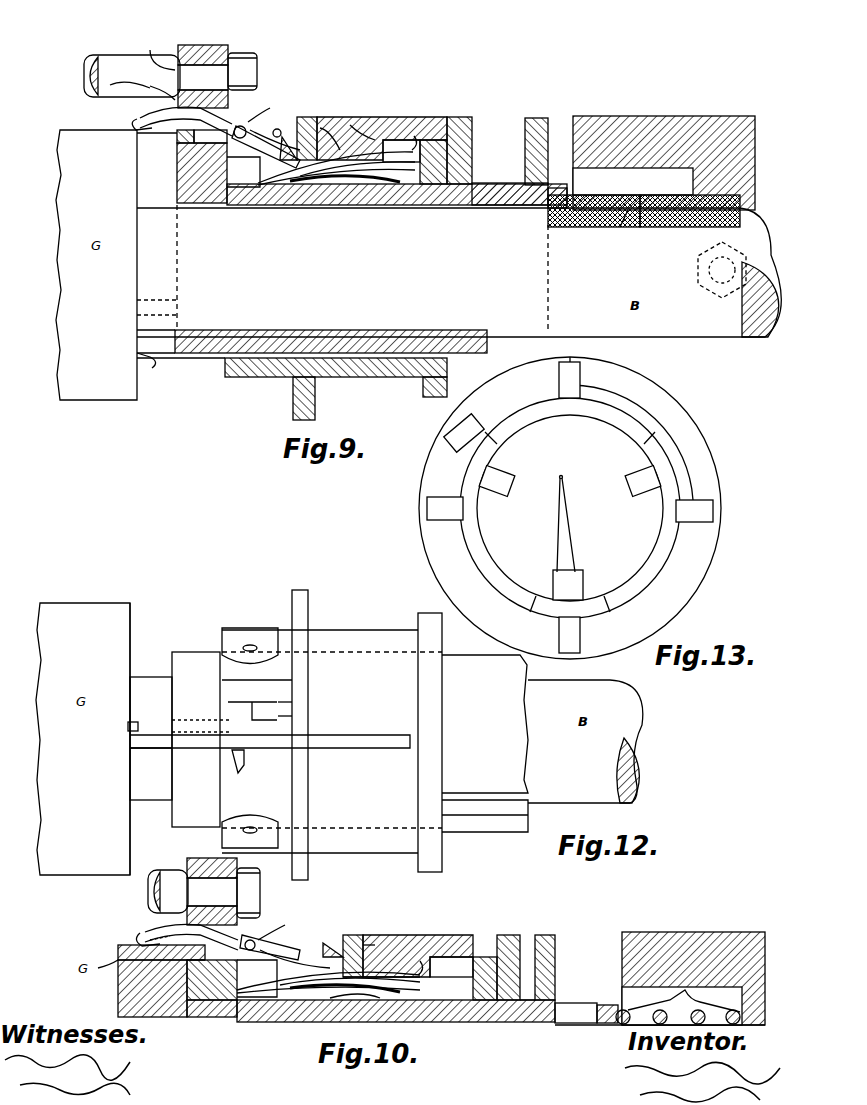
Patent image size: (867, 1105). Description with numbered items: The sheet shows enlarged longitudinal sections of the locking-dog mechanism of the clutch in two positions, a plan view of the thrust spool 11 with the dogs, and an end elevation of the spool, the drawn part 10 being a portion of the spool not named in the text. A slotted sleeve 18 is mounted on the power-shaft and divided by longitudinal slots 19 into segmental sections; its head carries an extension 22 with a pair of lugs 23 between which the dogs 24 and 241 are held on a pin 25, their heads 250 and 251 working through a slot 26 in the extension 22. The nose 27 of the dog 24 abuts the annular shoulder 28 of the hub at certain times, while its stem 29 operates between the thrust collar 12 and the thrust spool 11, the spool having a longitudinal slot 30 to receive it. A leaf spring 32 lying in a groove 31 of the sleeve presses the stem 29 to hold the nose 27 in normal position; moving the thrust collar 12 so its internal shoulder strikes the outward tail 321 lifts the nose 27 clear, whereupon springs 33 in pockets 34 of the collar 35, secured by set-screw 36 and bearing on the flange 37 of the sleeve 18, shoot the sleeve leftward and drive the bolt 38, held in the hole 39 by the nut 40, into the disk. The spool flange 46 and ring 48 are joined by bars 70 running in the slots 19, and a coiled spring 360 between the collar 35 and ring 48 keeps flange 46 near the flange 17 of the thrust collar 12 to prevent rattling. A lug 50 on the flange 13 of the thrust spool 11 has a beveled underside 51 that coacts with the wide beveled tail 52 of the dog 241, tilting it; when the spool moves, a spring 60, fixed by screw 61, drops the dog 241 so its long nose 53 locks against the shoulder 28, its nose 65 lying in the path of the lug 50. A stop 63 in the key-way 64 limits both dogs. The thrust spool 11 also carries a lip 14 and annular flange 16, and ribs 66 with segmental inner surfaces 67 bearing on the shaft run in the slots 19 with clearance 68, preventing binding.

In FIG. 13, the ring 10 is at (690, 425).
In FIG. 12, the ring 10 is at (235, 645).
In FIG. 9, the thrust spool 11 is at (330, 345).
In FIG. 13, the thrust spool 11 is at (570, 508).
In FIG. 12, the thrust spool 11 is at (362, 640).
In FIG. 10, the thrust spool 11 is at (470, 945).
In FIG. 9, the thrust collar 12 is at (385, 130).
In FIG. 9, the flange of the thrust spool 13 is at (348, 120).
In FIG. 13, the flange of the thrust spool 13 is at (636, 385).
In FIG. 12, the flange of the thrust spool 13 is at (302, 612).
In FIG. 10, the flange of the thrust spool 13 is at (392, 935).
In FIG. 9, the lip 14 is at (137, 337).
In FIG. 13, the lip 14 is at (580, 603).
In FIG. 9, the annular flange 16 is at (447, 152).
In FIG. 12, the annular flange 16 is at (428, 680).
In FIG. 10, the annular flange 16 is at (507, 940).
In FIG. 10, the flange 17 is at (460, 935).
In FIG. 9, the sleeve 18 is at (400, 365).
In FIG. 12, the sleeve 18 is at (485, 724).
In FIG. 12, the slots 19 is at (474, 800).
In FIG. 9, the extension 22 is at (203, 45).
In FIG. 10, the extension 22 is at (215, 1000).
In FIG. 9, the lugs 23 is at (177, 190).
In FIG. 12, the lugs 23 is at (280, 682).
In FIG. 10, the lugs 23 is at (250, 1000).
In FIG. 9, the dog 24 is at (262, 165).
In FIG. 12, the dog 24 is at (200, 735).
In FIG. 10, the dog 24 is at (270, 958).
In FIG. 9, the pin 25 is at (250, 123).
In FIG. 12, the pin 25 is at (238, 773).
In FIG. 10, the pin 25 is at (279, 923).
In FIG. 10, the slot 26 is at (118, 952).
In FIG. 9, the nose 27 is at (140, 120).
In FIG. 12, the nose 27 is at (130, 741).
In FIG. 10, the nose 27 is at (145, 934).
In FIG. 9, the annular shoulder 28 is at (137, 138).
In FIG. 12, the annular shoulder 28 is at (130, 660).
In FIG. 10, the annular shoulder 28 is at (120, 985).
In FIG. 9, the stem 29 is at (352, 126).
In FIG. 12, the stem 29 is at (380, 738).
In FIG. 10, the stem 29 is at (455, 1055).
In FIG. 13, the longitudinal slot 30 is at (512, 440).
In FIG. 10, the longitudinal slot 30 is at (450, 1000).
In FIG. 9, the longitudinal groove 31 is at (306, 205).
In FIG. 10, the longitudinal groove 31 is at (298, 1022).
In FIG. 9, the leaf spring 32 is at (360, 195).
In FIG. 10, the leaf spring 32 is at (400, 1000).
In FIG. 9, the springs 33 is at (672, 230).
In FIG. 9, the pockets 34 is at (598, 228).
In FIG. 9, the collar 35 is at (615, 130).
In FIG. 10, the collar 35 is at (668, 945).
In FIG. 9, the set-screw 36 is at (705, 290).
In FIG. 9, the flange 37 is at (537, 120).
In FIG. 10, the flange 37 is at (545, 940).
In FIG. 9, the bolt 38 is at (113, 62).
In FIG. 10, the bolt 38 is at (168, 891).
In FIG. 9, the hole 39 is at (161, 50).
In FIG. 10, the hole 39 is at (212, 877).
In FIG. 9, the nut 40 is at (242, 58).
In FIG. 10, the nut 40 is at (262, 910).
In FIG. 9, the flange 46 is at (462, 118).
In FIG. 10, the flange 46 is at (520, 935).
In FIG. 9, the ring 48 is at (548, 215).
In FIG. 10, the ring 48 is at (605, 1005).
In FIG. 9, the lug 50 is at (320, 128).
In FIG. 13, the lug 50 is at (472, 425).
In FIG. 12, the lug 50 is at (278, 717).
In FIG. 10, the lug 50 is at (368, 945).
In FIG. 9, the beveled underside 51 is at (312, 125).
In FIG. 10, the beveled underside 51 is at (355, 935).
In FIG. 9, the beveled tail 52 is at (284, 137).
In FIG. 12, the beveled tail 52 is at (278, 702).
In FIG. 10, the beveled tail 52 is at (325, 945).
In FIG. 9, the nose 53 is at (137, 124).
In FIG. 12, the nose 53 is at (128, 727).
In FIG. 10, the nose 53 is at (140, 938).
In FIG. 9, the spring 60 is at (203, 77).
In FIG. 10, the spring 60 is at (212, 901).
In FIG. 9, the screw 61 is at (242, 71).
In FIG. 10, the screw 61 is at (262, 893).
In FIG. 9, the stop 63 is at (177, 138).
In FIG. 10, the stop 63 is at (187, 985).
In FIG. 9, the key-way 64 is at (195, 160).
In FIG. 10, the key-way 64 is at (222, 1017).
In FIG. 9, the nose 65 is at (280, 190).
In FIG. 10, the nose 65 is at (320, 945).
In FIG. 13, the ribs 66 is at (500, 468).
In FIG. 13, the inner surfaces 67 is at (625, 468).
In FIG. 9, the clearance 68 is at (378, 190).
In FIG. 10, the clearance 68 is at (465, 1000).
In FIG. 10, the bars 70 is at (568, 1003).
In FIG. 9, the dog 241 is at (262, 135).
In FIG. 12, the dog 241 is at (178, 720).
In FIG. 10, the dog 241 is at (296, 966).
In FIG. 9, the head 250 is at (125, 79).
In FIG. 12, the head 250 is at (147, 725).
In FIG. 9, the head 251 is at (165, 90).
In FIG. 12, the head 251 is at (152, 745).
In FIG. 9, the tail 321 is at (405, 180).
In FIG. 10, the tail 321 is at (420, 950).
In FIG. 9, the coiled spring 360 is at (628, 228).
In FIG. 10, the coiled spring 360 is at (695, 988).